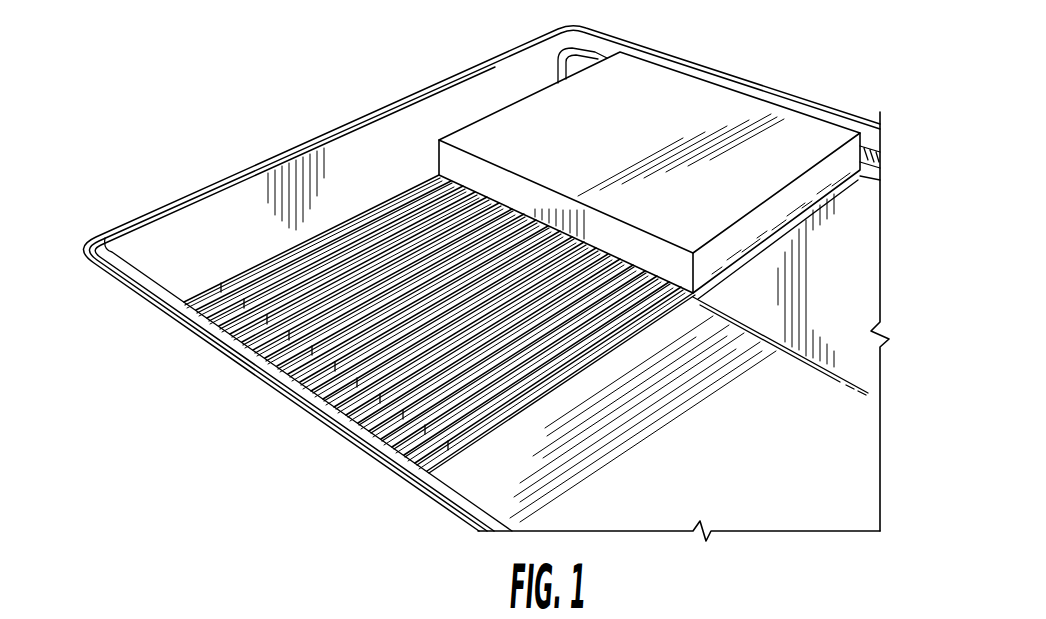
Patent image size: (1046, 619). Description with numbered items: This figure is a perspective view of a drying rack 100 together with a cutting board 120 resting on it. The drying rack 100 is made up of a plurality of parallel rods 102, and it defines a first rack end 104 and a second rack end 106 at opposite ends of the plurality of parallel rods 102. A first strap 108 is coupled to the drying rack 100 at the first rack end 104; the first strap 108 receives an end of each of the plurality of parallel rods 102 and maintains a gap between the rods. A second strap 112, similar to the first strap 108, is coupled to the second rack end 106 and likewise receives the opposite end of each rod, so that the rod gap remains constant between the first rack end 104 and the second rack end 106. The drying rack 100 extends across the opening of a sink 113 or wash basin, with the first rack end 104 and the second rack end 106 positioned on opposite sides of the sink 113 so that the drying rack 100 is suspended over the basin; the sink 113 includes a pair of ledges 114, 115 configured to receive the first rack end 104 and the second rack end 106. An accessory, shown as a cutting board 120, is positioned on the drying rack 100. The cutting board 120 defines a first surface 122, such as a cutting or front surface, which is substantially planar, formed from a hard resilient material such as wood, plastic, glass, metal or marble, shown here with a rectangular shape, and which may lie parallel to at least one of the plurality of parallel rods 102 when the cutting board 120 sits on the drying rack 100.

The drying rack 100 is at (353, 167).
The plurality of parallel rods 102 is at (266, 261).
The first rack end 104 is at (239, 369).
The second rack end 106 is at (897, 153).
The first strap 108 is at (380, 433).
The second strap 112 is at (880, 148).
The sink 113 is at (86, 218).
The ledge 114 is at (482, 497).
The ledge 115 is at (593, 54).
The cutting board 120 is at (485, 126).
The first surface 122 is at (690, 108).